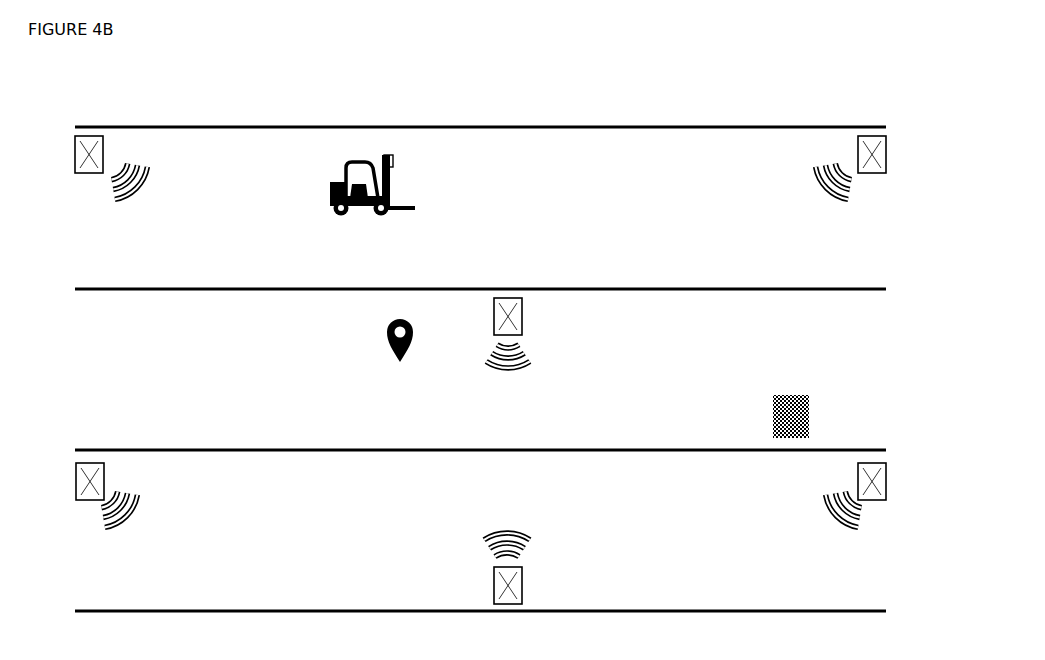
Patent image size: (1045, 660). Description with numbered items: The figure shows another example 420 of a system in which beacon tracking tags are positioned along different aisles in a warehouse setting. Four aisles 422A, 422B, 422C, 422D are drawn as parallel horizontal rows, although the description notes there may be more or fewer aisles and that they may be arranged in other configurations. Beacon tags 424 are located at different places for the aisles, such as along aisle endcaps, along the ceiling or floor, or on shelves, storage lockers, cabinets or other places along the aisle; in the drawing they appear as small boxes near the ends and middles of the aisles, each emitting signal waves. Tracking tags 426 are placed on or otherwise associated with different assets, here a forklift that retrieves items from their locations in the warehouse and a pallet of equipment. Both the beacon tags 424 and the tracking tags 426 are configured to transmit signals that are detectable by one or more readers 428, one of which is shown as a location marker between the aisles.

The example 420 is at (92, 65).
The aisle 422A is at (946, 136).
The aisle 422B is at (946, 298).
The aisle 422C is at (946, 460).
The aisle 422D is at (947, 621).
The beacon tag 424 is at (872, 133).
The tracking tag 426 is at (352, 153).
The reader 428 is at (390, 347).